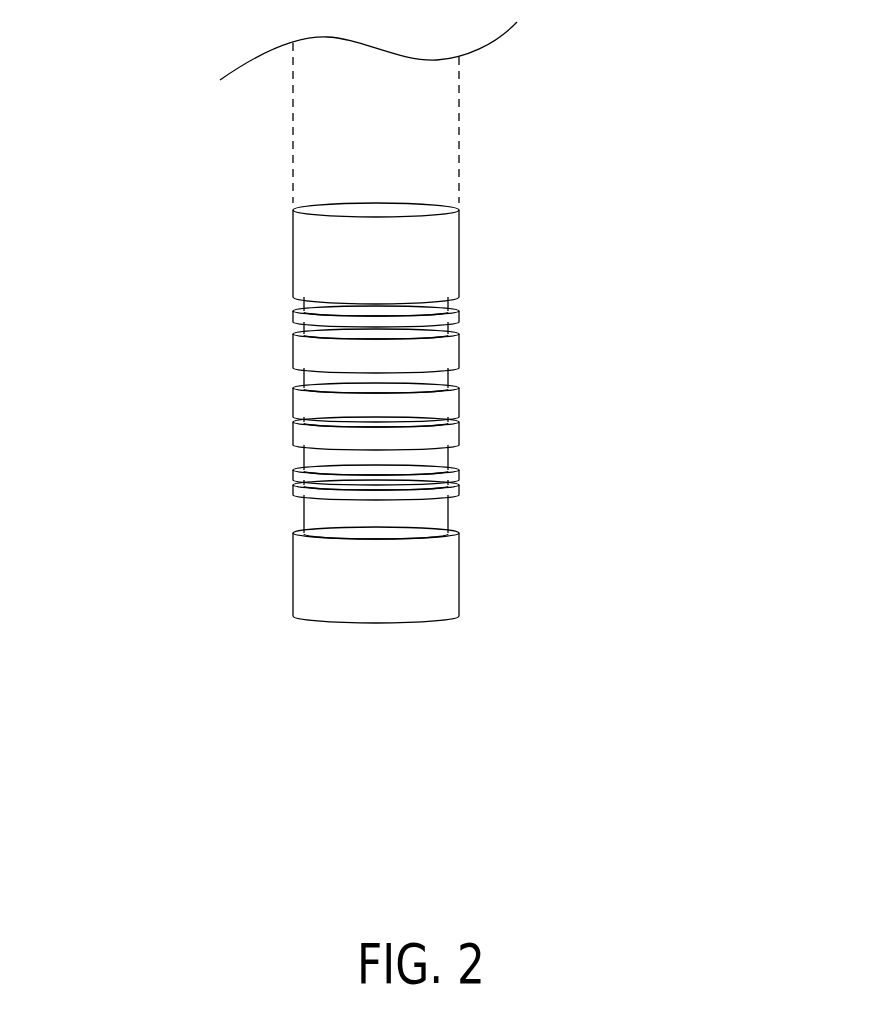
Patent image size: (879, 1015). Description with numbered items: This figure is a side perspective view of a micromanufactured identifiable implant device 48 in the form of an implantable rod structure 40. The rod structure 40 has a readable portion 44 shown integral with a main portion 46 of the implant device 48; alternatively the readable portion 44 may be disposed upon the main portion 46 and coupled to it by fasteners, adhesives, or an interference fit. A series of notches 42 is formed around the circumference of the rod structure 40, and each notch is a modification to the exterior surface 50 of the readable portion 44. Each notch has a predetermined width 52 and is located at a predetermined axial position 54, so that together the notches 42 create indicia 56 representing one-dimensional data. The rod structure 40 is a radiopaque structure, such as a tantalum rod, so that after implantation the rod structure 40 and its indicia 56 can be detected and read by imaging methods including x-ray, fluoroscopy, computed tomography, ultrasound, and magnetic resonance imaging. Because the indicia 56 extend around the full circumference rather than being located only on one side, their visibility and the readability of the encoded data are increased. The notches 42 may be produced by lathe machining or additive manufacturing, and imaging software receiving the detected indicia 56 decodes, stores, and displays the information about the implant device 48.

The implantable rod structure 40 is at (620, 193).
The notches 42 is at (462, 533).
The readable portion 44 is at (243, 277).
The main portion 46 is at (232, 143).
The implant device 48 is at (690, 308).
The exterior surface 50 is at (435, 280).
The predetermined width 52 is at (292, 495).
The predetermined axial position 54 is at (290, 477).
The indicia 56 is at (247, 365).